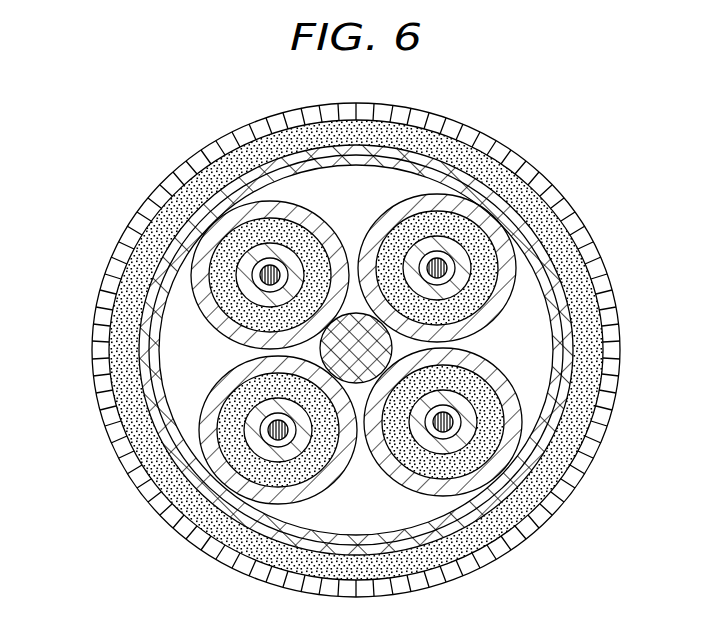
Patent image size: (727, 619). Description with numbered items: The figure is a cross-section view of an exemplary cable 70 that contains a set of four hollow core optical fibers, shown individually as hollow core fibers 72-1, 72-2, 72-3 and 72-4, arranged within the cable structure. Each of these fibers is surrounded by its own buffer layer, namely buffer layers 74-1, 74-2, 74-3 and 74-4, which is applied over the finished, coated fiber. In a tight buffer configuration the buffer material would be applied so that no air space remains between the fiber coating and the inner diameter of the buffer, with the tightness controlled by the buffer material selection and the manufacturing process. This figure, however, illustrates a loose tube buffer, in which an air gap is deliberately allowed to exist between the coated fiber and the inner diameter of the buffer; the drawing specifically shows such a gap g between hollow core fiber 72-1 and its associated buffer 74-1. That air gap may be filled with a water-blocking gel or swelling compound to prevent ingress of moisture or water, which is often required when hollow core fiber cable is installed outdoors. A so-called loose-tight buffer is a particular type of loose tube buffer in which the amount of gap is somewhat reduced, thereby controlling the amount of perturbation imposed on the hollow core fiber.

The cable 70 is at (152, 116).
The hollow core fiber 72-1 is at (267, 277).
The hollow core fiber 72-2 is at (440, 263).
The hollow core fiber 72-3 is at (452, 428).
The hollow core fiber 72-4 is at (270, 437).
The buffer layer 74-1 is at (250, 257).
The buffer layer 74-2 is at (460, 280).
The buffer layer 74-3 is at (463, 407).
The buffer layer 74-4 is at (252, 430).
The gap g is at (260, 267).